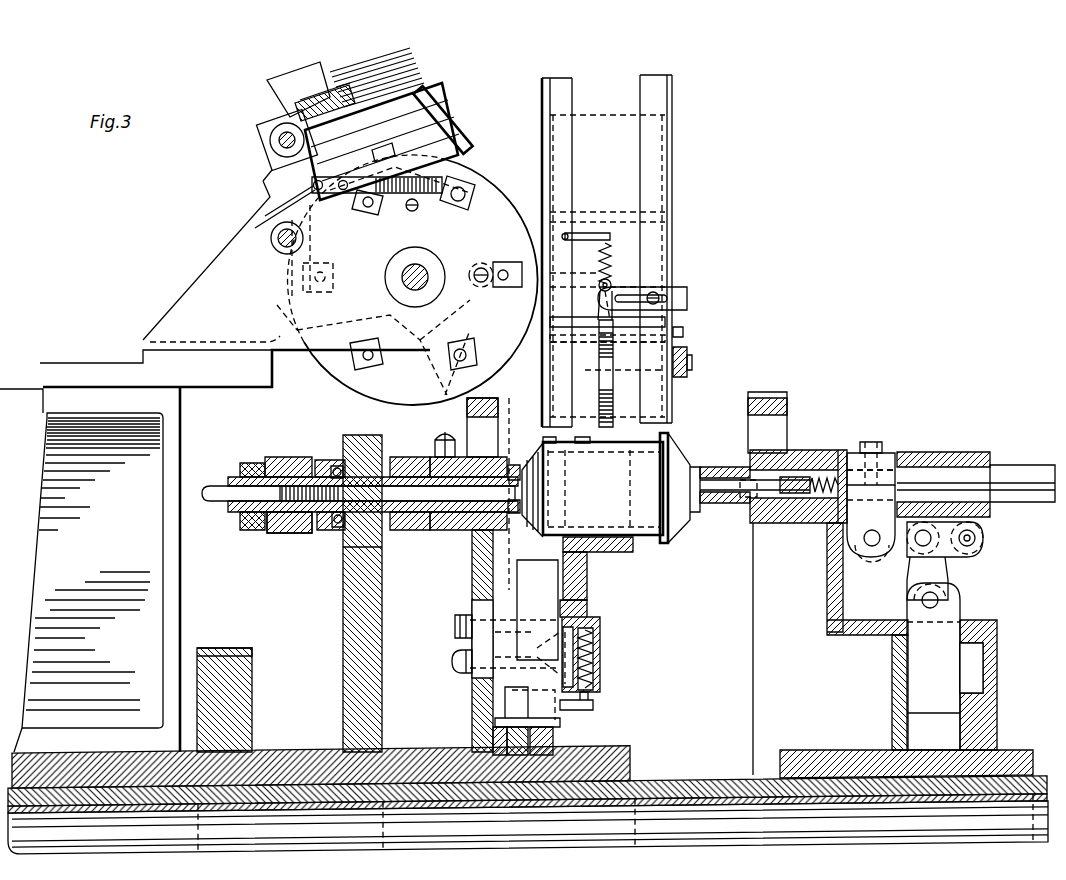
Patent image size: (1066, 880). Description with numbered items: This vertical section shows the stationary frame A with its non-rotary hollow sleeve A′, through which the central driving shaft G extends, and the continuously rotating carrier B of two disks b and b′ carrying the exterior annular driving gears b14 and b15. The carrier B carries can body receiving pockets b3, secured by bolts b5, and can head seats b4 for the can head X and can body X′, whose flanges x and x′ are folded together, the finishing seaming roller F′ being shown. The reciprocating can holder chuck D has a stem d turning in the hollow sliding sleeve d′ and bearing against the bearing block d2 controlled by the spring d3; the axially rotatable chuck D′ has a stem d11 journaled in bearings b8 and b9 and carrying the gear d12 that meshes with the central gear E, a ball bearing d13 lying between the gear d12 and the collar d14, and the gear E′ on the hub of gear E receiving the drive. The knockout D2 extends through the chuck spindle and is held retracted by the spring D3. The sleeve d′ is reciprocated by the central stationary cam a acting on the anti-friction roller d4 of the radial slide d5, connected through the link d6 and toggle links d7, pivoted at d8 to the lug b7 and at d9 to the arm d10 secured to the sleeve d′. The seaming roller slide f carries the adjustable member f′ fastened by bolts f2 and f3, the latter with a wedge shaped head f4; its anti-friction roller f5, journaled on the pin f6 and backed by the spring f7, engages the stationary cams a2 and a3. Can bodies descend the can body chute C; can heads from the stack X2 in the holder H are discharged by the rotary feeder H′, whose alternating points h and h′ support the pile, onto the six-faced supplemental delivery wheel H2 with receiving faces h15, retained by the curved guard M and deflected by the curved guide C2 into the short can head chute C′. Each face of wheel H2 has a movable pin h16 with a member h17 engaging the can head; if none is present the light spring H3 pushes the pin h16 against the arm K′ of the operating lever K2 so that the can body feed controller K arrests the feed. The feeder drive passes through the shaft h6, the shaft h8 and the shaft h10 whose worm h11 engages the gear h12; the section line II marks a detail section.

The central driving shaft G is at (528, 815).
The stationary frame A is at (15, 750).
The stationary hollow sleeve A′ is at (702, 775).
The gear on hub of central gear E′ is at (253, 663).
The central gear E is at (343, 565).
The can holder chuck D is at (669, 438).
The ejector spring D3 is at (275, 531).
The outer bearing b9 is at (412, 457).
The collar d14 is at (322, 460).
The spindle gear d12 is at (337, 466).
The ball bearing d13 is at (334, 532).
The bearing arm b8 is at (300, 535).
The chuck stem d11 is at (427, 514).
The knockout D2 is at (457, 515).
The carrier disk b is at (472, 573).
The annular driving gear b14 is at (464, 427).
The section line II is at (504, 485).
The can head X is at (545, 487).
The can head seat b4 is at (535, 458).
The can head flange x is at (546, 442).
The can body flange x′ is at (585, 442).
The can body X′ is at (612, 440).
The axially rotatable chuck D′ is at (543, 546).
The can body receiving pocket b3 is at (634, 539).
The pocket bolt b5 is at (587, 565).
The seaming roller F′ is at (578, 576).
The wedge shaped bolt head f4 is at (598, 662).
The slide spring f7 is at (598, 675).
The roller pin f6 is at (597, 705).
The anti-friction roller f5 is at (557, 723).
The stationary cam a2 is at (493, 740).
The stationary cam a3 is at (553, 740).
The adjustable member f′ is at (517, 625).
The seaming roller slide f is at (537, 627).
The slide bolt f2 is at (455, 623).
The wedge bolt f3 is at (455, 662).
The can body chute C is at (638, 80).
The curved guide C2 is at (541, 225).
The controller operating lever K2 is at (602, 280).
The can body feed controller K is at (613, 386).
The can head chute C′ is at (543, 355).
The lever arm K′ is at (418, 343).
The shaft h6 is at (402, 272).
The curved guard M is at (445, 122).
The rotary can head feeder H′ is at (390, 137).
The can head supporting points h′ is at (382, 152).
The stack of can heads X2 is at (398, 70).
The can head supporting points h is at (340, 197).
The light spring H3 is at (409, 208).
The pin member h17 is at (355, 352).
The movable pin h16 is at (447, 357).
The supplemental can head feeder H2 is at (300, 296).
The shaft h8 is at (272, 238).
The worm shaft h10 is at (270, 140).
The worm h11 is at (267, 160).
The gear h12 is at (290, 113).
The can head receiving face h15 is at (323, 100).
The can head holder H is at (273, 80).
The annular driving gear b15 is at (787, 396).
The chuck stem d is at (800, 450).
The sliding sleeve d′ is at (743, 507).
The bearing block d2 is at (803, 494).
The bearing block spring d3 is at (838, 450).
The toggle pivot d9 is at (872, 552).
The toggle links d7 is at (977, 547).
The toggle pivot d8 is at (970, 537).
The link d6 is at (948, 570).
The radial slide d5 is at (953, 617).
The anti-friction roller d4 is at (983, 650).
The stationary cam a is at (993, 718).
The arm d10 is at (853, 533).
The carrier disk b′ is at (892, 663).
The rotating carrier B is at (752, 620).
The lug b7 is at (990, 452).